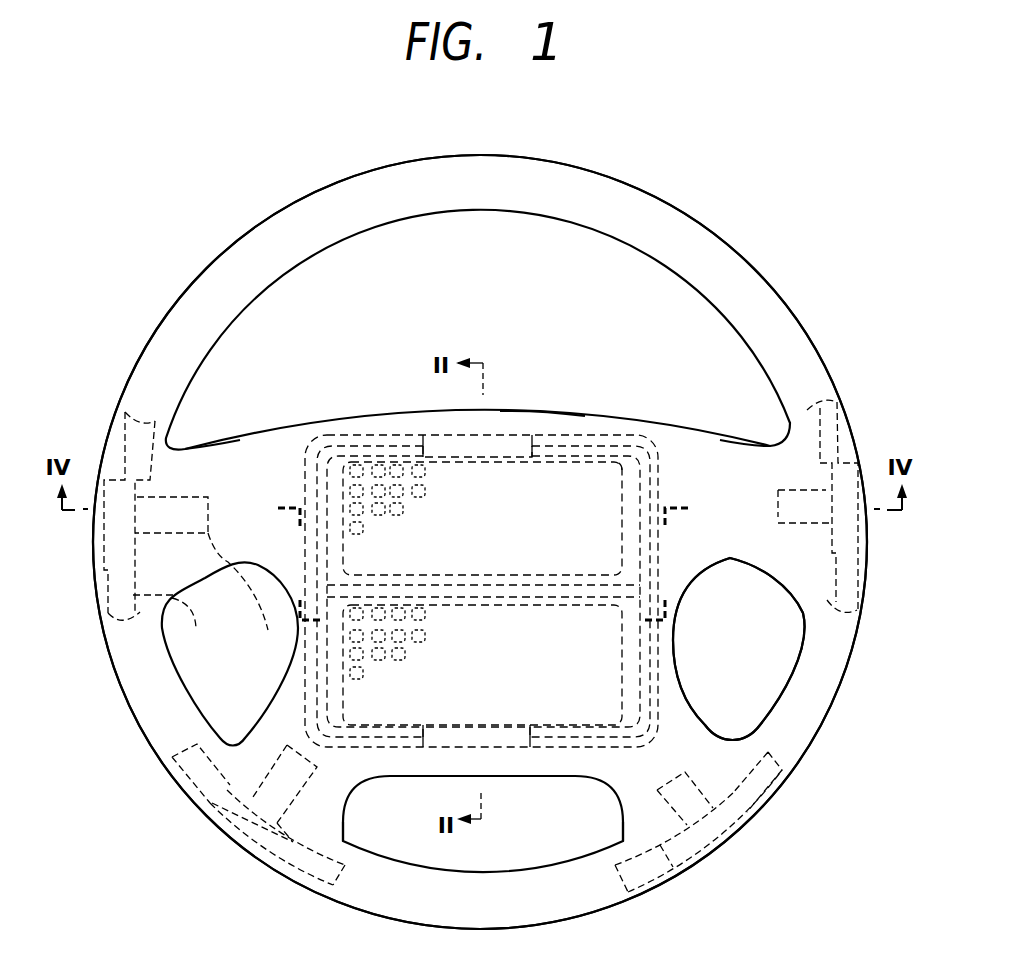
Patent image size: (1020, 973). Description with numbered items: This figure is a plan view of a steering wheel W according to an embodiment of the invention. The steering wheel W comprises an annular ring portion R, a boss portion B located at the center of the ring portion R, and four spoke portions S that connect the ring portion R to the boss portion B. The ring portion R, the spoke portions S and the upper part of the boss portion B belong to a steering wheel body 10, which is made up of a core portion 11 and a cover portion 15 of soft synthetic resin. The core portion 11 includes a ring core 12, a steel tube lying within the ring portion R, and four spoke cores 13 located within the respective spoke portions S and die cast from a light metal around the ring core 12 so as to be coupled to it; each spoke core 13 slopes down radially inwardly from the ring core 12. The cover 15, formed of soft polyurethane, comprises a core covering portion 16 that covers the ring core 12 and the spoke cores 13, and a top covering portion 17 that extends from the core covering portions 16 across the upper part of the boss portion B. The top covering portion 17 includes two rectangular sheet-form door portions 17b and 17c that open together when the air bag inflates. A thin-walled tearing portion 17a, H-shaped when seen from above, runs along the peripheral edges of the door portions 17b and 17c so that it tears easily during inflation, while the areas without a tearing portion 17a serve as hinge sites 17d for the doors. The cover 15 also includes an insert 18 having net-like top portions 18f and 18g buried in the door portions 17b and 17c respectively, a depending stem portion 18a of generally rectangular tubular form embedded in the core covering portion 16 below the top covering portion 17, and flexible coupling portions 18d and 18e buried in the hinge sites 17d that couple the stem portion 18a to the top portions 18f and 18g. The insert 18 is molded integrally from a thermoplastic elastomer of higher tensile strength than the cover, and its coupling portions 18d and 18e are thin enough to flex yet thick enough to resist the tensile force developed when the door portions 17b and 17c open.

The steering wheel body 10 is at (777, 290).
The annular ring portion R is at (650, 188).
The steering wheel W is at (740, 204).
The core portion 11 is at (481, 646).
The ring core 12 is at (171, 626).
The spoke core 13 is at (177, 650).
The cover portion 15 is at (443, 572).
The core covering portion 16 is at (213, 465).
The top covering portion 17 is at (495, 595).
The tearing portion 17a is at (633, 460).
The door portion 17b is at (497, 497).
The door portion 17c is at (521, 690).
The hinge site 17d is at (450, 452).
The insert 18 is at (731, 649).
The stem portion 18a is at (657, 662).
The coupling portion 18d is at (534, 440).
The coupling portion 18e is at (480, 723).
The net-like top portion 18f is at (363, 465).
The net-like top portion 18g is at (367, 667).
The boss portion B is at (588, 410).
The spoke portion S is at (207, 440).